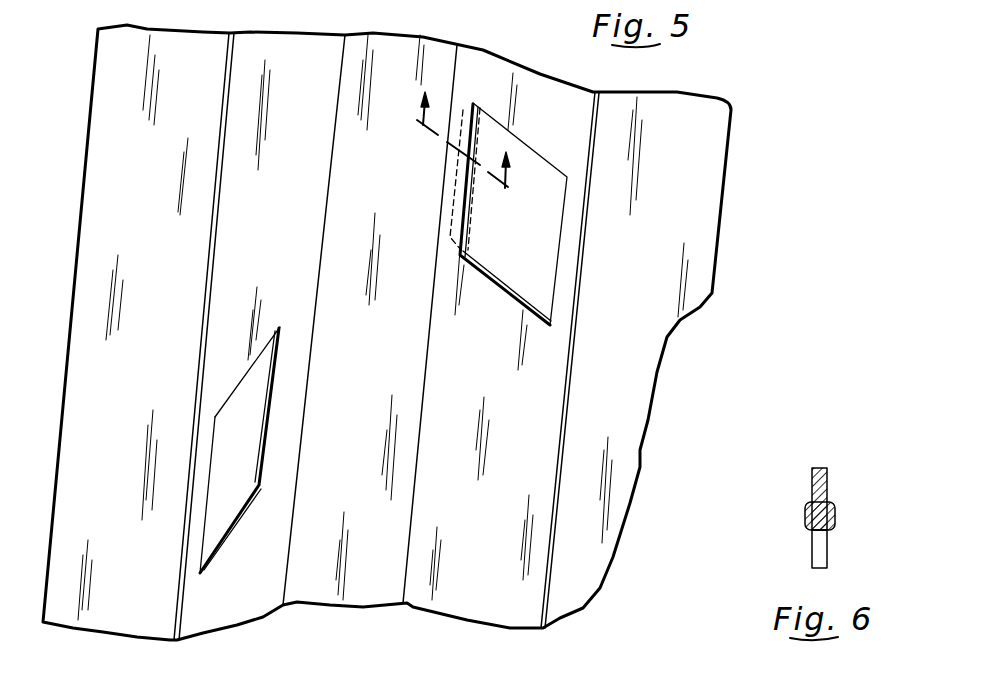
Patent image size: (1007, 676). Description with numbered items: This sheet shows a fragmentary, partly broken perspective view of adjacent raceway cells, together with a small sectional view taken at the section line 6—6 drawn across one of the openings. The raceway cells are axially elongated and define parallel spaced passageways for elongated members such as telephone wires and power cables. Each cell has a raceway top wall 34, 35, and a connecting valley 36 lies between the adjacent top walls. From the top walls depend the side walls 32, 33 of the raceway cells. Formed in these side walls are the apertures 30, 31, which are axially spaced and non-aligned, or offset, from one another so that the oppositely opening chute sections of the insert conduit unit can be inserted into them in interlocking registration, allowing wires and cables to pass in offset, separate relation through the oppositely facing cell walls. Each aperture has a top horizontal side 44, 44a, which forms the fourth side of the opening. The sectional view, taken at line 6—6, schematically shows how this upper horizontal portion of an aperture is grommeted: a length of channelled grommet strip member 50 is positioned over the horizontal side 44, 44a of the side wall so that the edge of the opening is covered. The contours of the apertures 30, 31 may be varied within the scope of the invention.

In FIG. 5, the aperture 30 is at (243, 411).
In FIG. 6, the aperture 30 is at (820, 548).
In FIG. 5, the aperture 31 is at (518, 258).
In FIG. 5, the side wall 32 is at (503, 516).
In FIG. 5, the side wall 33 is at (290, 207).
In FIG. 5, the raceway top wall 34 is at (148, 392).
In FIG. 5, the raceway top wall 35 is at (667, 301).
In FIG. 5, the connecting valley 36 is at (390, 367).
In FIG. 5, the top horizontal side 44 is at (207, 500).
In FIG. 6, the top horizontal side 44 is at (827, 480).
In FIG. 5, the top horizontal side 44a is at (562, 192).
In FIG. 6, the channelled grommet strip member 50 is at (805, 511).
In FIG. 5, the section line 6— 6 is at (458, 152).